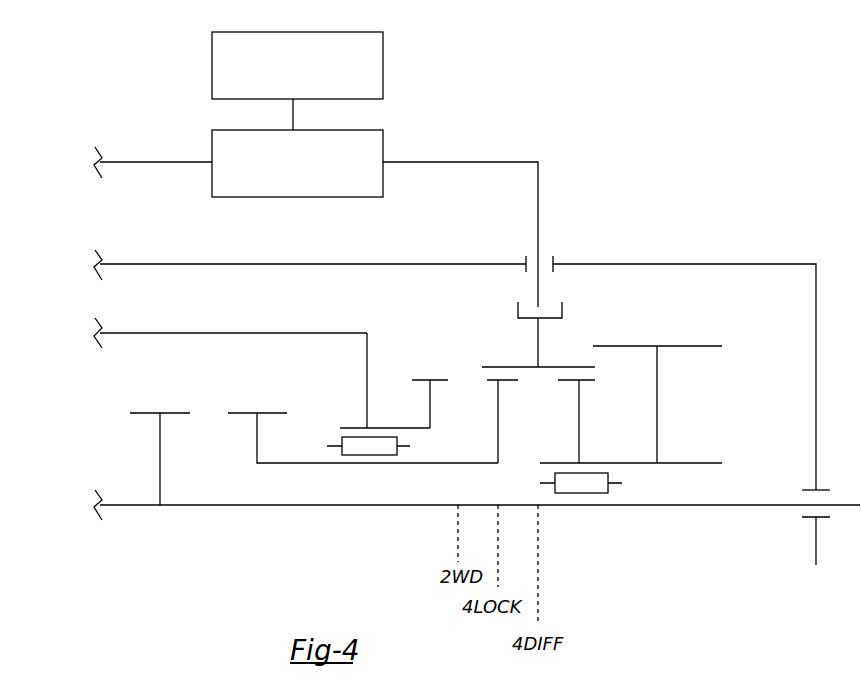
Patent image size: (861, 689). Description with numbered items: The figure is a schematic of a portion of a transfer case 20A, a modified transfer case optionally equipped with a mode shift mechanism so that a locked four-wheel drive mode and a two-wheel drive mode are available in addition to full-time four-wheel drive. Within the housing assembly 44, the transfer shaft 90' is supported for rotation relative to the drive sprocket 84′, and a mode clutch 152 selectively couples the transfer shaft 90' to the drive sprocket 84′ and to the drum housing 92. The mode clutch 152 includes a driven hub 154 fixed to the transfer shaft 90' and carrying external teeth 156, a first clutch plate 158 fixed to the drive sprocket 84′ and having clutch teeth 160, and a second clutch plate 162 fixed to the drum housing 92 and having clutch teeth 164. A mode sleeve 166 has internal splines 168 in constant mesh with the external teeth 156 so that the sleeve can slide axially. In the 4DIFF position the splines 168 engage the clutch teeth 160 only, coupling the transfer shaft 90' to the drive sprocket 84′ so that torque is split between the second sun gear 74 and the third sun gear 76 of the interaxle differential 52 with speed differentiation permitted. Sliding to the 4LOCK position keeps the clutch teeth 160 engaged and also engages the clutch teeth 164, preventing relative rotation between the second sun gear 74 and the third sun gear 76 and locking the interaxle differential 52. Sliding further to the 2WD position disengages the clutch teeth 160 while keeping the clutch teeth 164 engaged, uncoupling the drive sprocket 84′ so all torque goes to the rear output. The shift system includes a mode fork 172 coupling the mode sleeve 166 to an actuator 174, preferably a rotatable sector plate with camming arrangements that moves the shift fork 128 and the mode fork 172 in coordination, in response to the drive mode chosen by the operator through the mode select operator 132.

The mode select operator 132 is at (383, 67).
The actuator 174 is at (383, 187).
The shift fork 128 is at (150, 163).
The mode fork 172 is at (538, 218).
The transfer case 20A is at (690, 198).
The housing assembly 44 is at (790, 264).
The interaxle differential 52 is at (191, 331).
The drum housing 92 is at (312, 333).
The second sun gear 74 is at (160, 457).
The third sun gear 76 is at (258, 447).
The transfer shaft 90' is at (368, 469).
The clutch teeth 164 is at (420, 378).
The second clutch plate 162 is at (430, 407).
The external teeth 156 is at (487, 381).
The driven hub 154 is at (531, 416).
The mode sleeve 166 is at (537, 350).
The mode clutch 152 is at (572, 343).
The internal splines 168 is at (595, 367).
The first clutch plate 158 is at (579, 417).
The clutch teeth 160 is at (596, 381).
The drive sprocket 84′ is at (658, 400).